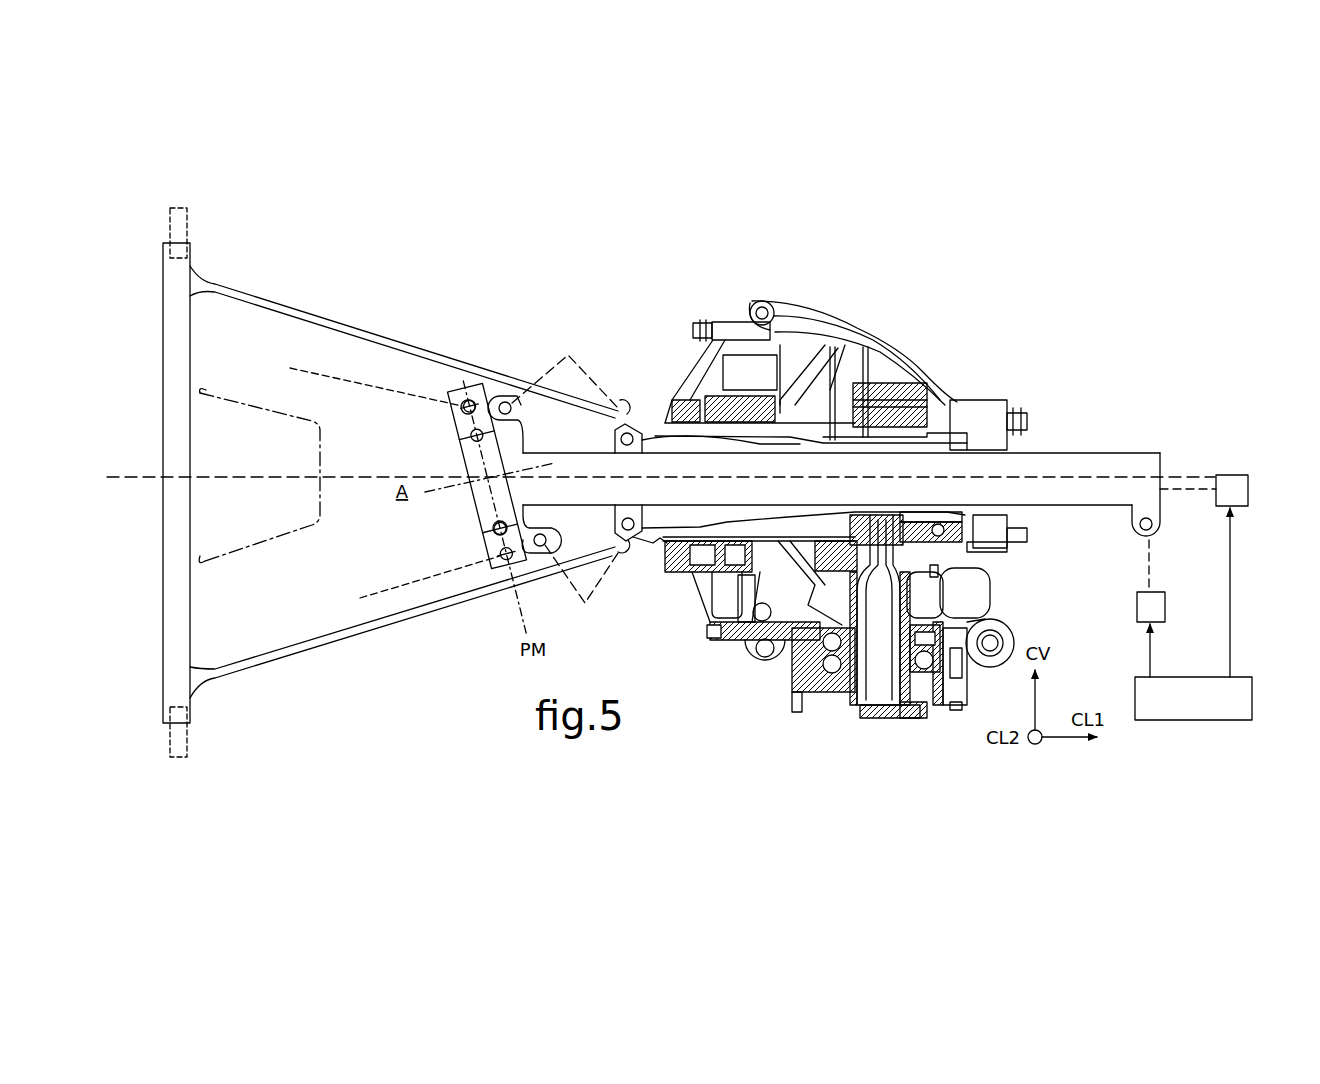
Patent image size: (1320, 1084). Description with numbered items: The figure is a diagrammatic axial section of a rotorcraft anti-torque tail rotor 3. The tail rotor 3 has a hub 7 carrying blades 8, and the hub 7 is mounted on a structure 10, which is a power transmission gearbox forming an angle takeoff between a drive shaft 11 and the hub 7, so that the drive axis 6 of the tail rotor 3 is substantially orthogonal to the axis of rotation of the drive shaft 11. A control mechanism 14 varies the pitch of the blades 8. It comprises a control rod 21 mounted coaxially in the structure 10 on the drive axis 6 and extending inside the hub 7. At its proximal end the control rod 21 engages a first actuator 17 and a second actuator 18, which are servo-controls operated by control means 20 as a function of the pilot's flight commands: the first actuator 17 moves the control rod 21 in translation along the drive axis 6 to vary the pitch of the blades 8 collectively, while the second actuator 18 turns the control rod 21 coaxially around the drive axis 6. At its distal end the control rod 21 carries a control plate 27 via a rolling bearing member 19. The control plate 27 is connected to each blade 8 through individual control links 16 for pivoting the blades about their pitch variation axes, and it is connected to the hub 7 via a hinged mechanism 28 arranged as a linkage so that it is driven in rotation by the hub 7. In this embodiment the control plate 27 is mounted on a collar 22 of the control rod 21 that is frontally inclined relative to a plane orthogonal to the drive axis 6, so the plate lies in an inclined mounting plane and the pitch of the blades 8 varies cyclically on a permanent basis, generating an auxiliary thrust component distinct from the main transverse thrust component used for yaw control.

The anti-torque tail rotor 3 is at (1112, 358).
The drive axis 6 is at (661, 490).
The hub 7 is at (345, 325).
The blades 8 is at (190, 243).
The structure 10 is at (880, 332).
The drive shaft 11 is at (834, 615).
The control mechanism 14 is at (471, 338).
The control links 16 is at (328, 376).
The first actuator 17 is at (1204, 490).
The second actuator 18 is at (1151, 581).
The rolling bearing member 19 is at (493, 527).
The control means 20 is at (1193, 614).
The control rod 21 is at (1118, 453).
The collar 22 is at (463, 464).
The control plate 27 is at (470, 395).
The hinged mechanism 28 is at (603, 397).